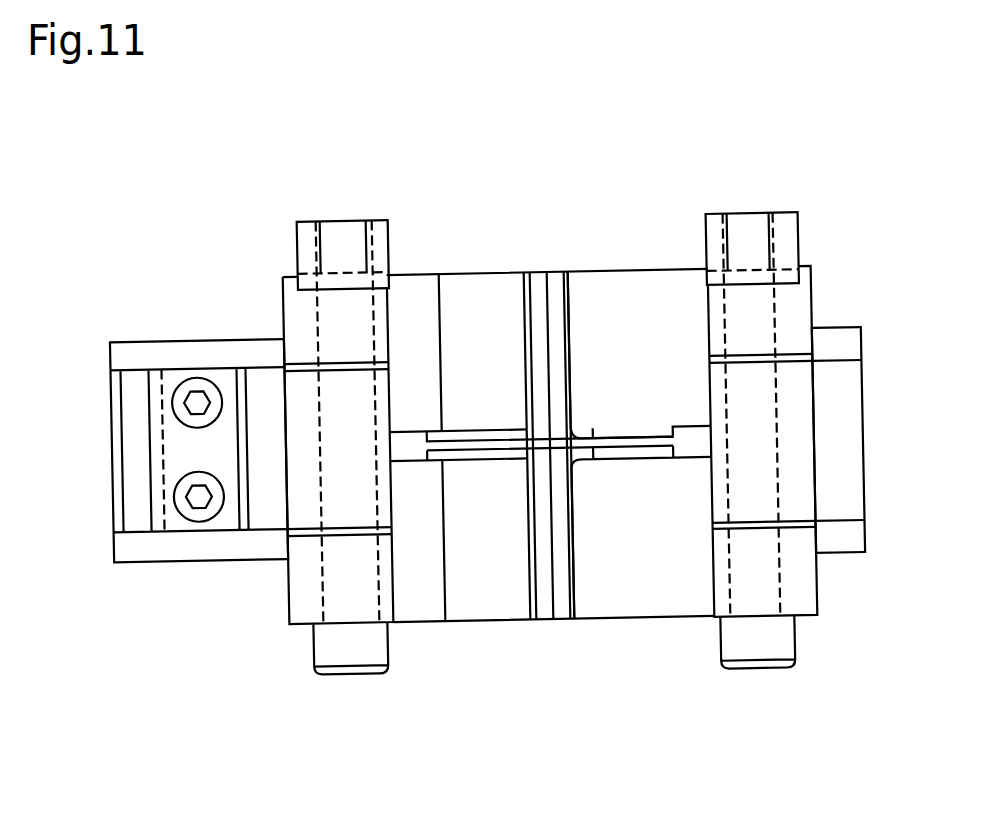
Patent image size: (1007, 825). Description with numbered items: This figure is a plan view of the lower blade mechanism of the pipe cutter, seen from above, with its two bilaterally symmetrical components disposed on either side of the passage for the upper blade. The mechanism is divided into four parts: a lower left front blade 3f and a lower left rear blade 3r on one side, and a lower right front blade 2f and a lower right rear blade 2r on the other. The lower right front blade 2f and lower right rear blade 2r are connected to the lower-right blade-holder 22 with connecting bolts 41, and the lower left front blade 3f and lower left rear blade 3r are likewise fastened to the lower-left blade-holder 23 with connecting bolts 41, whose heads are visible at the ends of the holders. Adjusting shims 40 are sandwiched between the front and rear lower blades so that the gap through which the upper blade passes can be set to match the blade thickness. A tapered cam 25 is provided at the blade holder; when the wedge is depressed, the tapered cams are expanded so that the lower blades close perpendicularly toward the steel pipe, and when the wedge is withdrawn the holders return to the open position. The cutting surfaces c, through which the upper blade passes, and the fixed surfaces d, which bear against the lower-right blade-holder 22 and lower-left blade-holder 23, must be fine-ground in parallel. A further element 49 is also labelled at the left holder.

The lower right rear blade 2r is at (612, 290).
The lower right front blade 2f is at (650, 605).
The lower left rear blade 3r is at (498, 253).
The lower left front blade 3f is at (483, 600).
The lower-right blade-holder 22 is at (803, 466).
The lower-left blade-holder 23 is at (174, 484).
The tapered cam 25 is at (130, 416).
The adjusting shim 40 is at (340, 373).
The connecting bolt 41 is at (357, 652).
The fixing bolt 49 is at (226, 378).
The cutting surface c is at (495, 443).
The fixed surface d is at (365, 372).